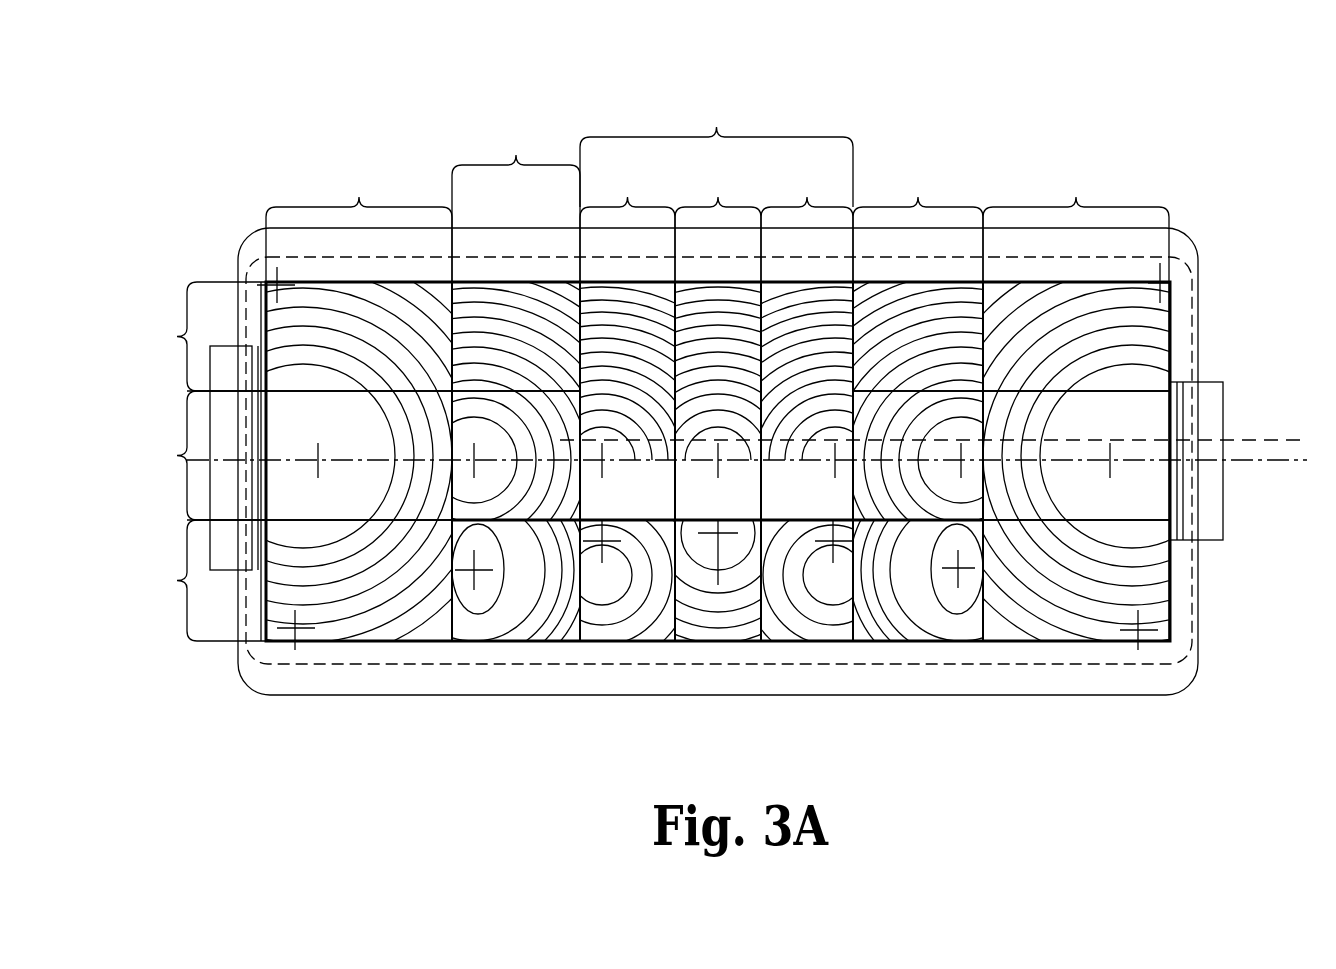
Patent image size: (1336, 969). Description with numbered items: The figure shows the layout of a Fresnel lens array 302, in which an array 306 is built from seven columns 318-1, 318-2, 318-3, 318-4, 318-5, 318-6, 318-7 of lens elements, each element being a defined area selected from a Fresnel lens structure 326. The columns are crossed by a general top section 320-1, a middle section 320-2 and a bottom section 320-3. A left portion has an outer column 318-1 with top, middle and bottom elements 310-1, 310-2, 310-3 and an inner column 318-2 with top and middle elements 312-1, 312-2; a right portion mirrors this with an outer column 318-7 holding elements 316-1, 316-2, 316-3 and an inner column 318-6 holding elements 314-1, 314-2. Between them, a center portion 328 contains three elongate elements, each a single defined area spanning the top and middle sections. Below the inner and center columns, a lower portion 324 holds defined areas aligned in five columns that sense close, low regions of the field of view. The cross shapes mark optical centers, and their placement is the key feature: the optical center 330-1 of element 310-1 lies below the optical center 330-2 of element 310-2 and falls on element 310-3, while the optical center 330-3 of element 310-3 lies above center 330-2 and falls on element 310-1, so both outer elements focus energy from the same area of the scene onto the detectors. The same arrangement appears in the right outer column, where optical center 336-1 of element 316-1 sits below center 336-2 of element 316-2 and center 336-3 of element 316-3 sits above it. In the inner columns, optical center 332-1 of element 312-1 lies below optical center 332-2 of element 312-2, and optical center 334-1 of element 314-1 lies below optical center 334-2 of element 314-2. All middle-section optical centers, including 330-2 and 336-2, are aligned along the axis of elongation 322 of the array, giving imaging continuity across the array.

The Fresnel lens array 302 is at (203, 112).
The array 306 is at (522, 283).
The top section lens element of outer column 310-1 is at (325, 352).
The middle section lens element of outer column 310-2 is at (325, 435).
The bottom section lens element of outer column 310-3 is at (325, 600).
The top section lens element of inner column 312-1 is at (489, 352).
The middle section lens element of inner column 312-2 is at (489, 435).
The top section lens element of inner column 314-1 is at (889, 352).
The middle section lens element of inner column 314-2 is at (889, 435).
The top section lens element of outer column 316-1 is at (1043, 352).
The middle section lens element of outer column 316-2 is at (1043, 435).
The bottom section lens element of outer column 316-3 is at (1043, 600).
The outer column 318-1 is at (359, 403).
The inner column 318-2 is at (516, 384).
The column 318-3 is at (627, 403).
The column 318-4 is at (718, 403).
The column 318-5 is at (807, 403).
The inner column 318-6 is at (918, 403).
The outer column 318-7 is at (1076, 224).
The top section 320-1 is at (192, 336).
The middle section 320-2 is at (192, 455).
The bottom section 320-3 is at (192, 580).
The axis of elongation 322 is at (1290, 464).
The lower portion 324 is at (722, 643).
The Fresnel lens structure 326 is at (1121, 470).
The center portion 328 is at (716, 145).
The optical center 330-1 is at (292, 632).
The optical center 330-2 is at (316, 458).
The optical center 330-3 is at (262, 281).
The optical center 332-1 is at (478, 582).
The optical center 332-2 is at (470, 464).
The optical center 334-1 is at (975, 500).
The optical center 334-2 is at (970, 470).
The optical center 336-1 is at (1148, 633).
The optical center 336-2 is at (1112, 460).
The optical center 336-3 is at (1176, 285).